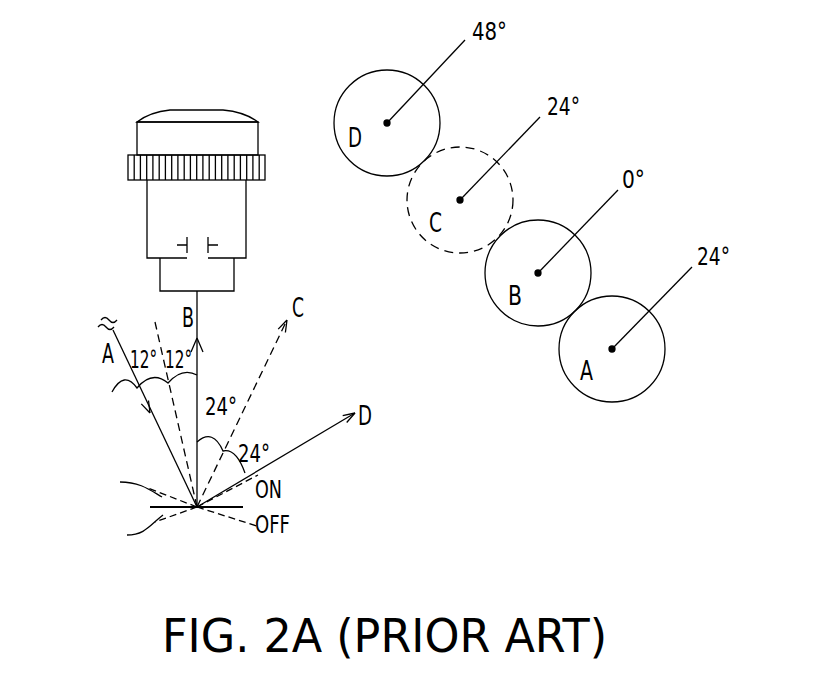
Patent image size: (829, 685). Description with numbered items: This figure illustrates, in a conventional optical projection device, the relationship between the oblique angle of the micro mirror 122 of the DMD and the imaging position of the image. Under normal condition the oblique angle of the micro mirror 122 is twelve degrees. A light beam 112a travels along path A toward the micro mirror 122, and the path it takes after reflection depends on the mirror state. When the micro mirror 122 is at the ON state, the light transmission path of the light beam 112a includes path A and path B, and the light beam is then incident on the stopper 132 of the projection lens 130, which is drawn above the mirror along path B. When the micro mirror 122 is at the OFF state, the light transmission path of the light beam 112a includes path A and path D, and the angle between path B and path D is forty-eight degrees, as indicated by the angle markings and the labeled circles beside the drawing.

The projection lens 130 is at (240, 201).
The stopper 132 is at (182, 246).
The light beam 112a is at (112, 392).
The micro mirror 122 is at (160, 505).